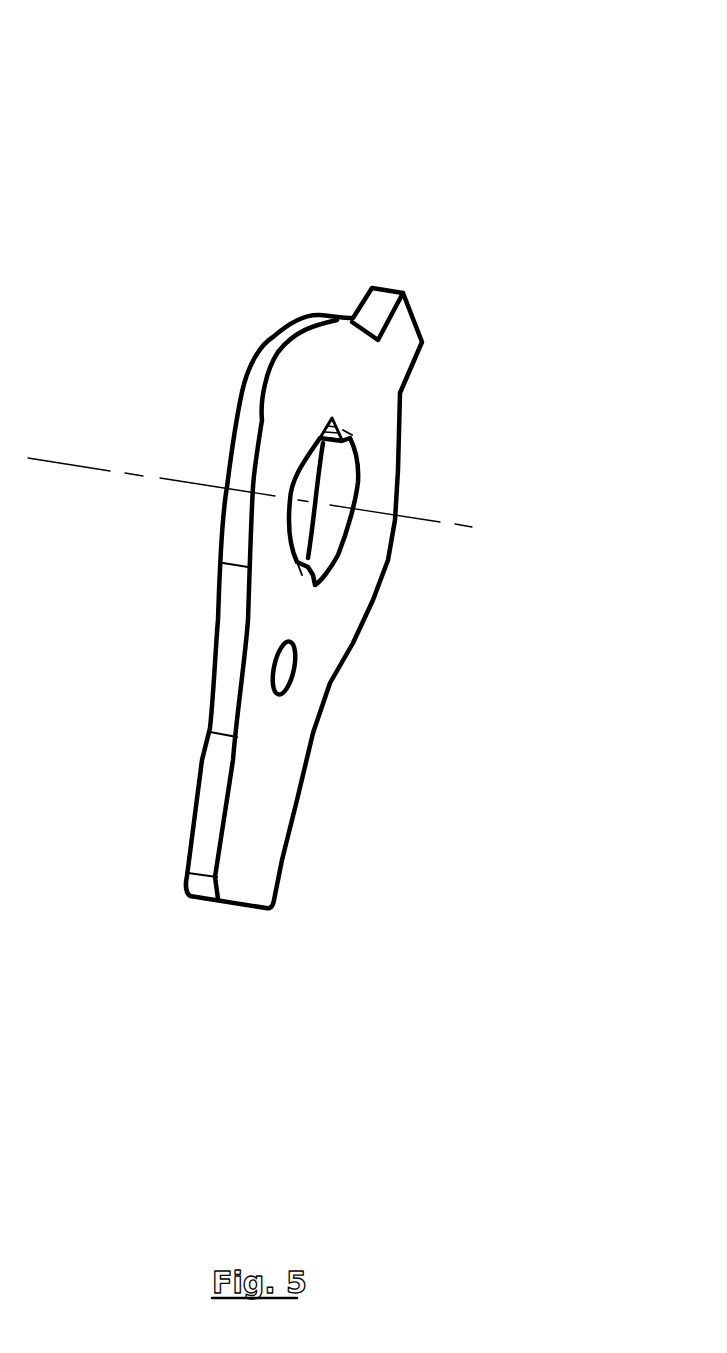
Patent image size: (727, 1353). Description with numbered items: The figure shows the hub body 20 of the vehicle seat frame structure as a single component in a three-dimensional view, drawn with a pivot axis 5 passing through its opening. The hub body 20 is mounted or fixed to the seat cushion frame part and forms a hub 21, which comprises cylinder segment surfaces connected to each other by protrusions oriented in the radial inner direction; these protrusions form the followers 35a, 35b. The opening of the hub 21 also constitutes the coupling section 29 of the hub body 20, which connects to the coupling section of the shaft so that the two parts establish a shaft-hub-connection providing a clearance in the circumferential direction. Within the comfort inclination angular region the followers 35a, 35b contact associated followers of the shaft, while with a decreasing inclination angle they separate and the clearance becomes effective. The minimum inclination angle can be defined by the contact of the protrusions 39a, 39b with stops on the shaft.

The hub body 20 is at (373, 186).
The pivot axis 5 is at (73, 460).
The hub 21 is at (343, 475).
The coupling section 29 is at (319, 532).
The follower 35a is at (318, 577).
The follower 35b is at (328, 426).
The protrusion 39a is at (300, 575).
The protrusion 39b is at (343, 430).